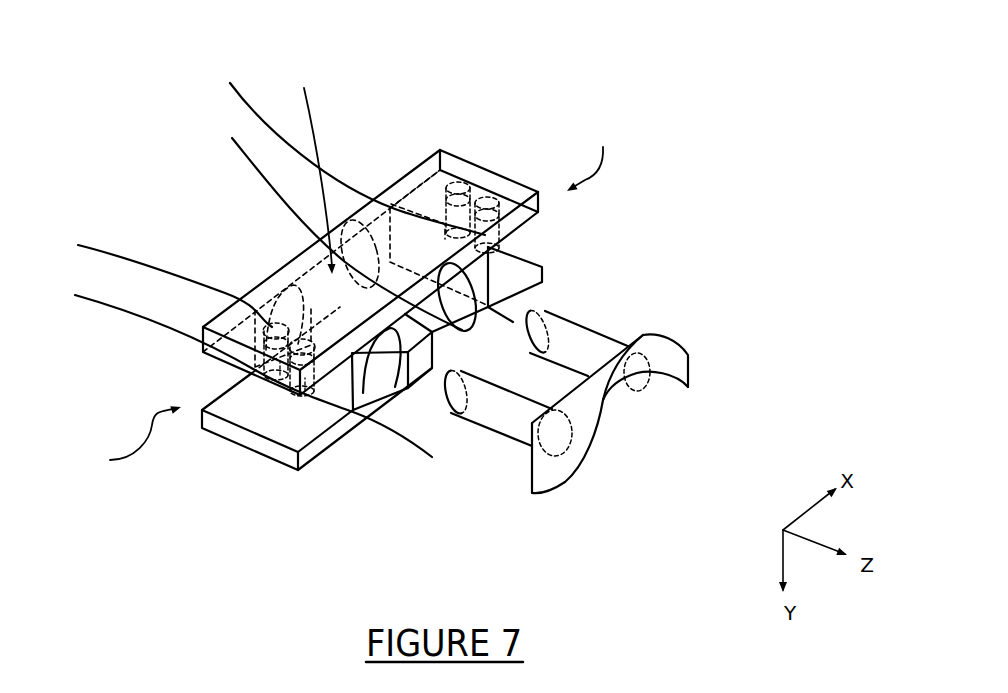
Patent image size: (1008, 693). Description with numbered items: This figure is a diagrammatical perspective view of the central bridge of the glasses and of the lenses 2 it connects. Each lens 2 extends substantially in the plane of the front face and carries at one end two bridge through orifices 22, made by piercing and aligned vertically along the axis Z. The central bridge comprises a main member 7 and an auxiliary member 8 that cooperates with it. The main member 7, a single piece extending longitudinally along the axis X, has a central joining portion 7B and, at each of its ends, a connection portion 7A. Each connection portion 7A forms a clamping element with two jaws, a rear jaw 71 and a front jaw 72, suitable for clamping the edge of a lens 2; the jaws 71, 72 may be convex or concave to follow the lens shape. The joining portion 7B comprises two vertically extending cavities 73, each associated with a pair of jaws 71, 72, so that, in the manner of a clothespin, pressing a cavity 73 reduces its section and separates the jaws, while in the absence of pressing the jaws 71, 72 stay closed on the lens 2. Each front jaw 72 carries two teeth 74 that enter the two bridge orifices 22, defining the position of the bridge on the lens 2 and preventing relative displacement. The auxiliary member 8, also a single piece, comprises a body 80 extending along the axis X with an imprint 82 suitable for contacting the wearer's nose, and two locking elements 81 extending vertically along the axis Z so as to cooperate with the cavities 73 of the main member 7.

The lens 2 is at (236, 103).
The main member 7 is at (310, 480).
The connection portion 7A is at (347, 297).
The joining portion 7B is at (313, 166).
The auxiliary member 8 is at (706, 330).
The bridge through orifices 22 is at (281, 372).
The rear jaw 71 is at (543, 290).
The front jaw 72 is at (513, 187).
The cavity 73 is at (453, 305).
The teeth 74 is at (458, 183).
The body 80 is at (688, 375).
The locking elements 81 is at (590, 320).
The imprint 82 is at (614, 407).